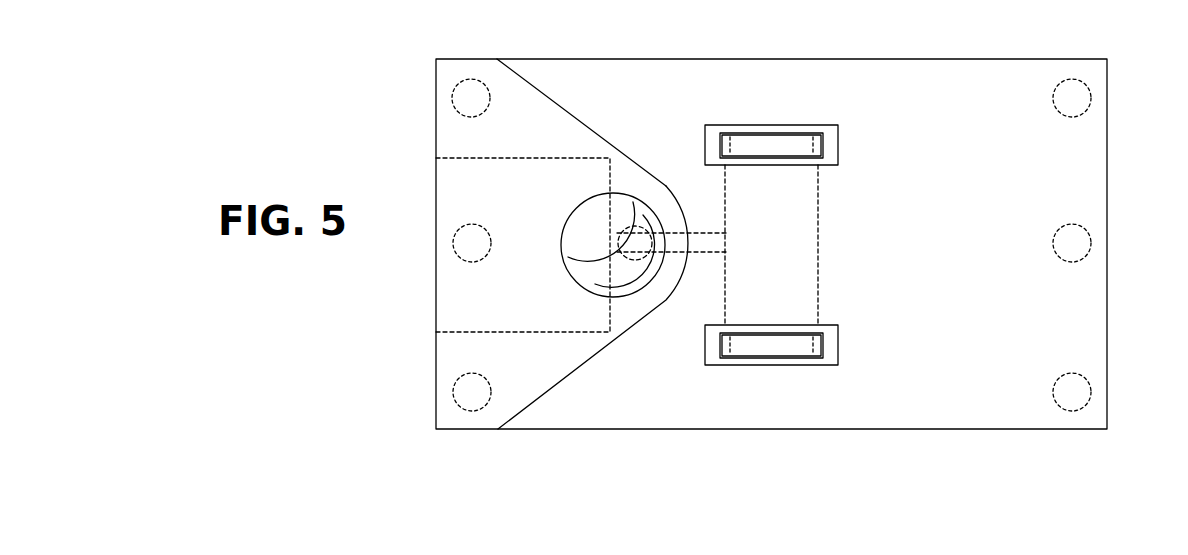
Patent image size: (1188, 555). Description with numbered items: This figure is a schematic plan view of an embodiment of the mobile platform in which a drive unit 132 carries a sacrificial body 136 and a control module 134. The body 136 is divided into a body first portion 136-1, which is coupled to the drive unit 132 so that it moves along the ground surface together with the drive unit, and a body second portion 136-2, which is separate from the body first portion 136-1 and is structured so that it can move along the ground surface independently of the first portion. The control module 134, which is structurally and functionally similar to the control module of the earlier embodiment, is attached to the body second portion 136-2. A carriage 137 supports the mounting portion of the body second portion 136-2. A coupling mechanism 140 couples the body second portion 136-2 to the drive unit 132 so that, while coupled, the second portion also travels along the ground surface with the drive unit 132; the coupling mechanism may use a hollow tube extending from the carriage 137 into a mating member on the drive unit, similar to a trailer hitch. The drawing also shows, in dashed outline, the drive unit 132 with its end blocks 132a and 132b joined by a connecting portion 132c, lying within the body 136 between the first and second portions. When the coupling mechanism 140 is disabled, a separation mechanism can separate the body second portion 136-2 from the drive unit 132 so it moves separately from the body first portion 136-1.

The drive unit 132 is at (820, 295).
The first clamp block 132a is at (762, 145).
The second clamp block 132b is at (767, 340).
The connecting member 132c is at (819, 237).
The control module 134 is at (600, 208).
The sacrificial body 136 is at (1067, 57).
The body first portion 136-1 is at (943, 92).
The body second portion 136-2 is at (600, 137).
The carriage 137 is at (593, 276).
The coupling mechanism 140 is at (707, 257).